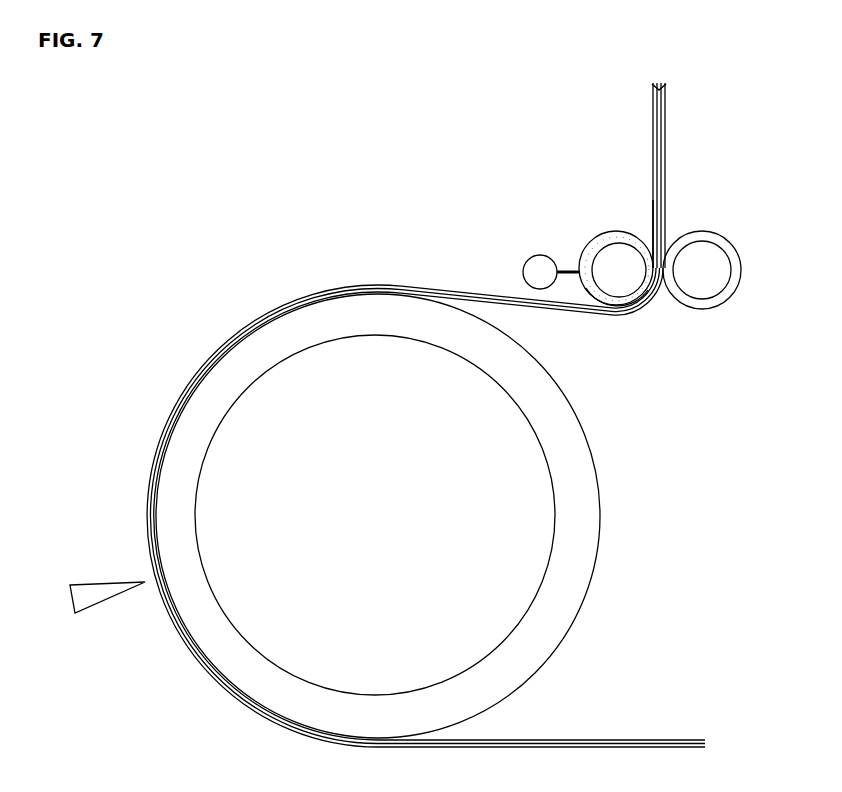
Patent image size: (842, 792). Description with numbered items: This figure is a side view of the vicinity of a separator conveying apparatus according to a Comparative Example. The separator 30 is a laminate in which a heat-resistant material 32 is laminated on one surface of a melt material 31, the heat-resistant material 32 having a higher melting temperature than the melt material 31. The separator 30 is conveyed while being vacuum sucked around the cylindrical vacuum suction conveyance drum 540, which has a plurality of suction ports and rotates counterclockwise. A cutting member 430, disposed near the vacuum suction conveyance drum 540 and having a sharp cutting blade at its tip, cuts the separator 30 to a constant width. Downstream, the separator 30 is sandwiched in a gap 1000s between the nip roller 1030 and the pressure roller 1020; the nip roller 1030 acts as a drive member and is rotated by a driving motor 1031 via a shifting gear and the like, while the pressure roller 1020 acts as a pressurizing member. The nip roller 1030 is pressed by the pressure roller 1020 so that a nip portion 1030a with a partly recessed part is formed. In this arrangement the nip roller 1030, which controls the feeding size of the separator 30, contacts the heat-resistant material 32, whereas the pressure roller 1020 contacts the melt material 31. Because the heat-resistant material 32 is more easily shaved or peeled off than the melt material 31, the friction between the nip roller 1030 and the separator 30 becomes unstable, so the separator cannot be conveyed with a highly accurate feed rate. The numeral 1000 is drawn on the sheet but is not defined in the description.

The separator 30 is at (396, 507).
The melt material 31 is at (176, 392).
The heat-resistant material 32 is at (190, 372).
The cutting member 430 is at (101, 600).
The vacuum suction conveyance drum 540 is at (530, 665).
The recording medium 1000 is at (666, 175).
The gap 1000s is at (651, 250).
The pressure roller 1020 is at (720, 233).
The nip roller 1030 is at (598, 281).
The nip portion 1030a is at (658, 298).
The driving motor 1031 is at (526, 262).